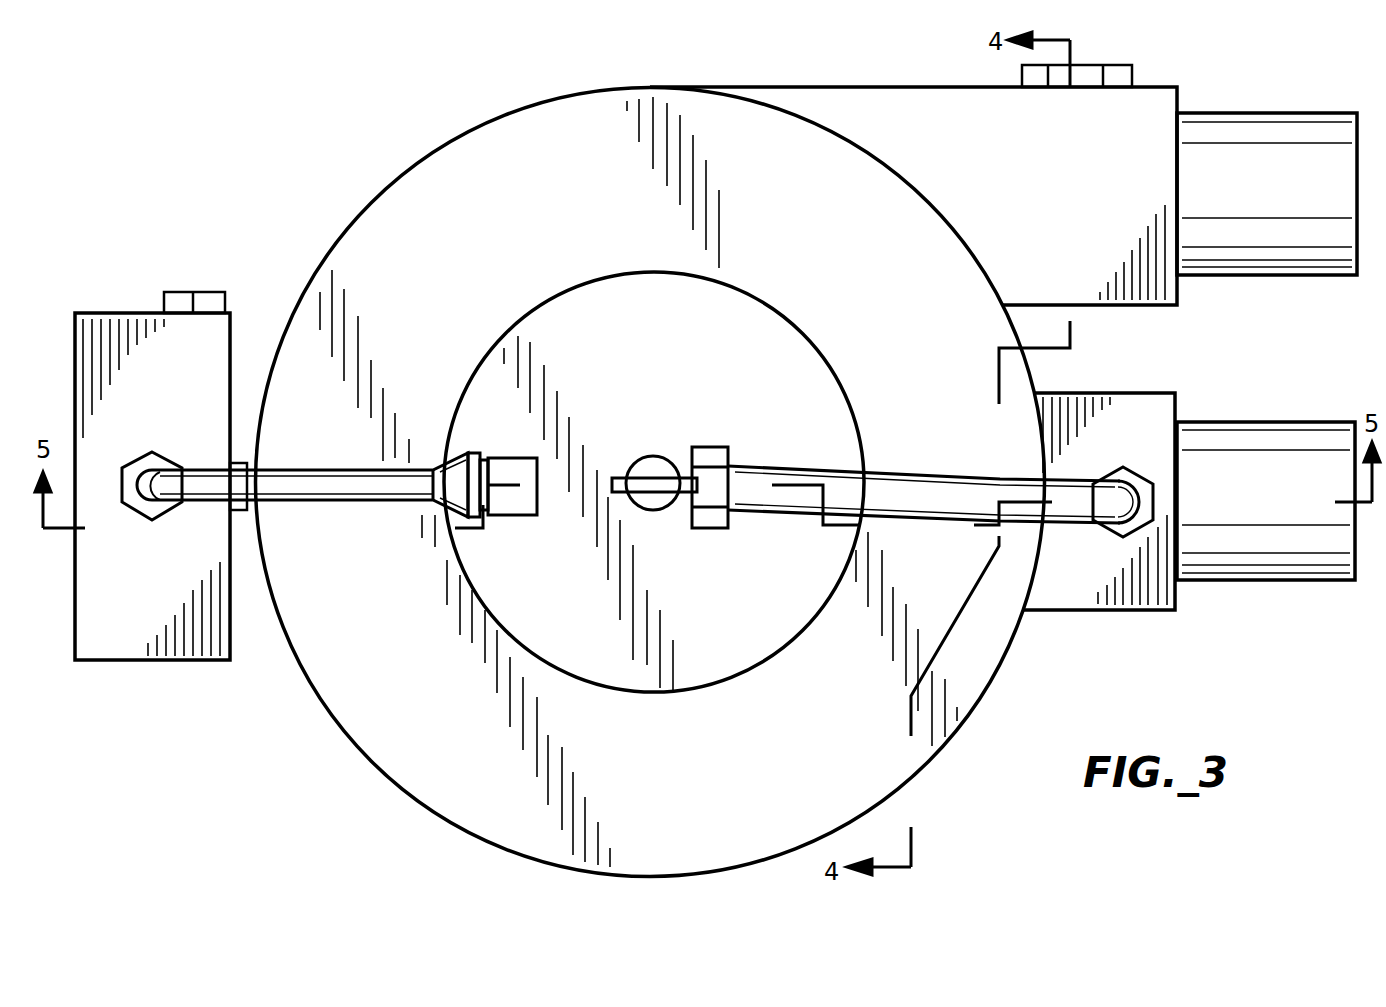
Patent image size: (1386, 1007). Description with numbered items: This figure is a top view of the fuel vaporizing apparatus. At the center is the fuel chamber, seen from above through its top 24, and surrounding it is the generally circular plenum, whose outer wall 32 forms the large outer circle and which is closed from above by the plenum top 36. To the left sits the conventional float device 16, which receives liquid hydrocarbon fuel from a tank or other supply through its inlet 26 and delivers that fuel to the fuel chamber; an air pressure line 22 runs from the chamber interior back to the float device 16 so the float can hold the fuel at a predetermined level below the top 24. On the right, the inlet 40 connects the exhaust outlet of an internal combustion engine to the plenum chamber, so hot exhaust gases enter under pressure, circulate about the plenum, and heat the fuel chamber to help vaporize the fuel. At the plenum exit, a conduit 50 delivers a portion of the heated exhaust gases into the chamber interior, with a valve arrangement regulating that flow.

The float device 16 is at (108, 313).
The inlet 26 is at (207, 290).
The air pressure line 22 is at (307, 468).
The top of the fuel chamber 24 is at (643, 693).
The plenum top 36 is at (383, 728).
The outer wall 32 is at (984, 693).
The conduit 50 is at (902, 476).
The inlet 40 is at (1242, 253).